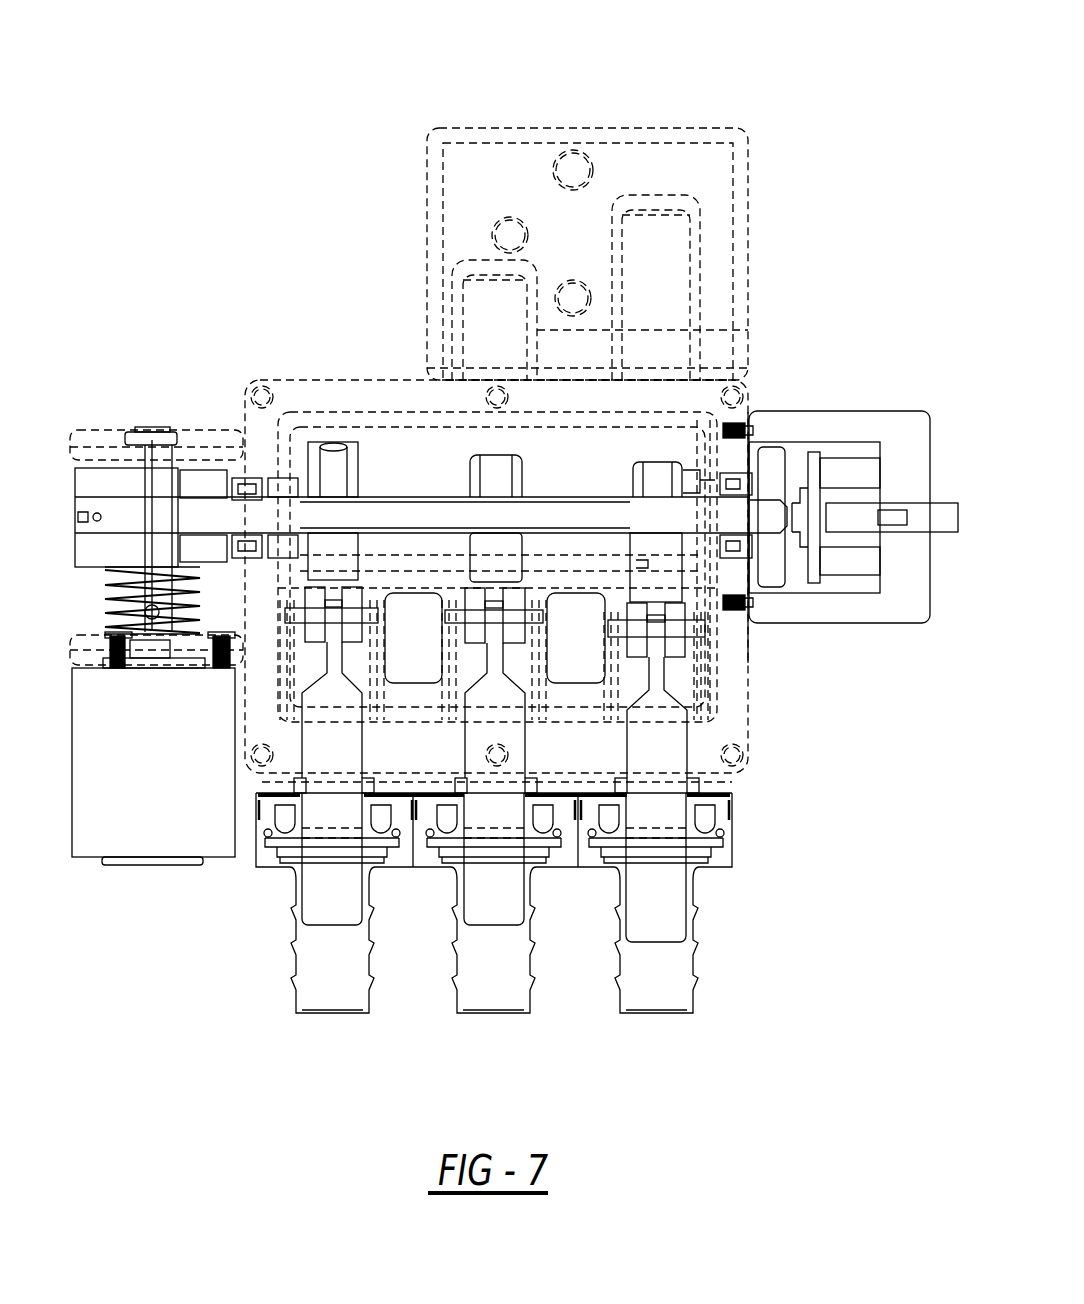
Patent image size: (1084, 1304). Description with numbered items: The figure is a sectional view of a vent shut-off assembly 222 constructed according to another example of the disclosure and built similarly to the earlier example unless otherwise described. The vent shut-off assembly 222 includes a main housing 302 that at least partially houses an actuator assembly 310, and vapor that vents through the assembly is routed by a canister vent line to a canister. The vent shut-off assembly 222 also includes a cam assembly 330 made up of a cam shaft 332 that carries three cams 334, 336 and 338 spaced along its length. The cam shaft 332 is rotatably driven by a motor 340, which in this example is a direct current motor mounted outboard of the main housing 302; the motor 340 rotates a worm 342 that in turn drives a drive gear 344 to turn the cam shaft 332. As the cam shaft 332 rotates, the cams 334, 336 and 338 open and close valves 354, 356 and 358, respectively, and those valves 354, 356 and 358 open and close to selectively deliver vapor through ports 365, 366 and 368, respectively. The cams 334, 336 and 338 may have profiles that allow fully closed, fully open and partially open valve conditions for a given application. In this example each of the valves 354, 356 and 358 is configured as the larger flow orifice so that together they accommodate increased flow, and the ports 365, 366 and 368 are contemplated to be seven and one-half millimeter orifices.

The vent shut-off assembly 222 is at (874, 148).
The main housing 302 is at (735, 663).
The actuator assembly 310 is at (89, 405).
The cam assembly 330 is at (770, 324).
The cam shaft 332 is at (537, 512).
The cam 334 is at (660, 548).
The cam 336 is at (493, 540).
The cam 338 is at (345, 545).
The motor 340 is at (137, 840).
The worm 342 is at (102, 612).
The drive gear 344 is at (157, 430).
The valve 354 is at (660, 745).
The valve 356 is at (477, 908).
The valve 358 is at (333, 887).
The port 365 is at (687, 968).
The port 366 is at (532, 990).
The port 368 is at (300, 997).